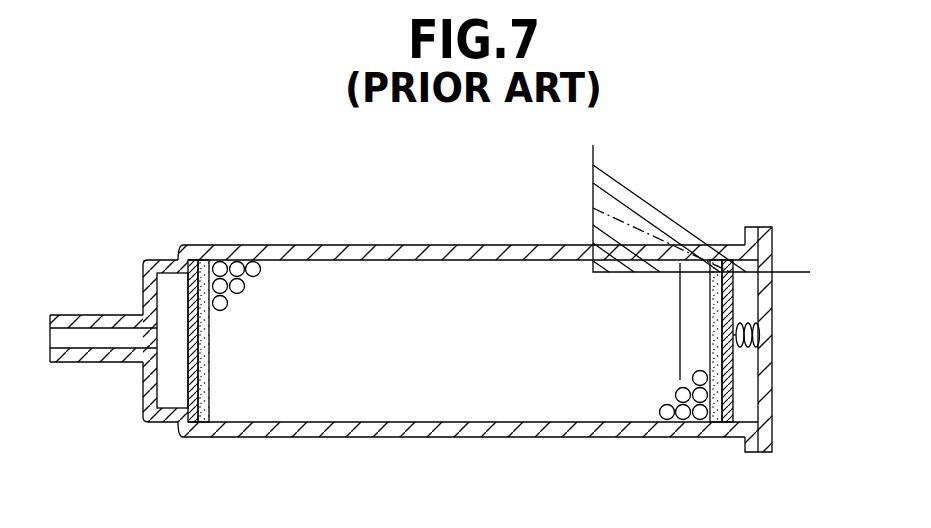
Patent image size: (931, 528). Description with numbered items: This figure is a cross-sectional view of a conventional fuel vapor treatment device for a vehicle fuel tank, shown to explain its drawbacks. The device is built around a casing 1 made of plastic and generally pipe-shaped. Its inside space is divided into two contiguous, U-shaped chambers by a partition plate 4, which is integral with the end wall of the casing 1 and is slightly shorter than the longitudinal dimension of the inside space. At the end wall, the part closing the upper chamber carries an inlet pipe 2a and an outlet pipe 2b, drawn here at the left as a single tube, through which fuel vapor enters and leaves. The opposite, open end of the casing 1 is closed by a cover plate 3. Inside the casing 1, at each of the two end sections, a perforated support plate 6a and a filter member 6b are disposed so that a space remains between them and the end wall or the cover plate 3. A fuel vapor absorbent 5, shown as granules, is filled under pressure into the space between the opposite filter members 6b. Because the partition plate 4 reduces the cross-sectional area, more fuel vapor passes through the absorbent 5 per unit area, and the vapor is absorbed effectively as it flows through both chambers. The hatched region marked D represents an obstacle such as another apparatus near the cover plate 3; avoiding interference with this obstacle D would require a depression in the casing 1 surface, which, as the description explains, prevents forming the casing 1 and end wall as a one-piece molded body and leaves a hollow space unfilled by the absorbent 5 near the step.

The casing 1 is at (399, 245).
The inlet pipe 2a is at (119, 331).
The outlet pipe 2b is at (83, 313).
The cover plate 3 is at (773, 253).
The partition plate 4 is at (503, 375).
The fuel vapor absorbent 5 is at (243, 290).
The perforated support plate 6a is at (187, 302).
The filter member 6b is at (200, 332).
The obstacle D is at (637, 220).